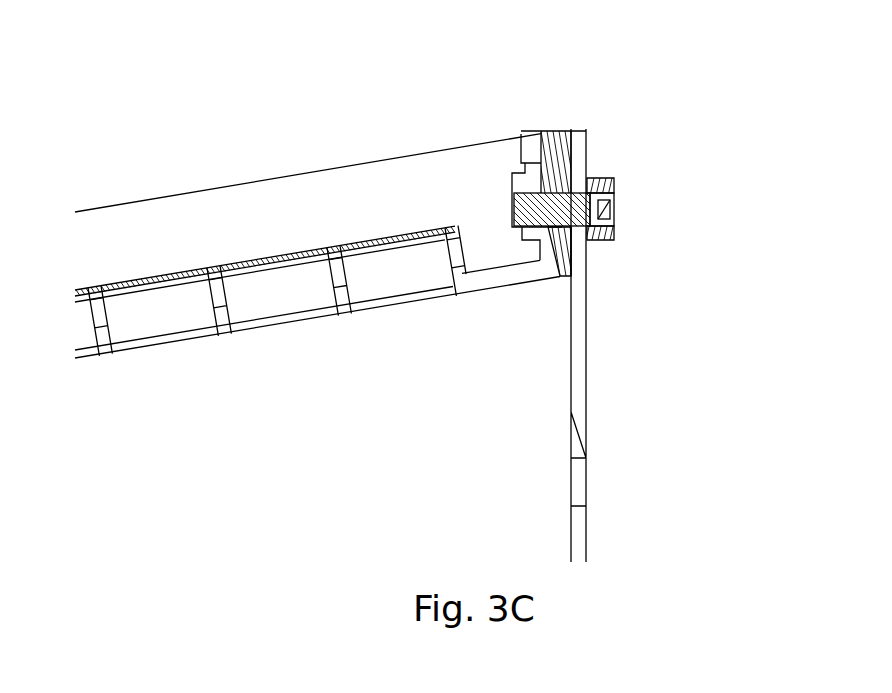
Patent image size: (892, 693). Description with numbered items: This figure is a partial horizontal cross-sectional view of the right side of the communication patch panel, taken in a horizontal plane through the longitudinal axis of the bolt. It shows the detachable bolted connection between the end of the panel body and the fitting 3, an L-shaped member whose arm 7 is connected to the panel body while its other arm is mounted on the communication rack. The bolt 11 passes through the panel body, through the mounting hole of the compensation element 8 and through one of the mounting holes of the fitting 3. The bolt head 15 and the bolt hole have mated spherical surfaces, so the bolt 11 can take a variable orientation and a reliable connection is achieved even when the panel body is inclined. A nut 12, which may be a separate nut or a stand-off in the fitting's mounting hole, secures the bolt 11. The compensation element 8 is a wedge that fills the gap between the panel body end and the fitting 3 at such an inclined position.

The compensation element 8 is at (557, 155).
The bolt head 15 is at (514, 208).
The nut 12 is at (613, 182).
The bolt 11 is at (618, 212).
The fitting 3 is at (669, 345).
The arm 7 is at (579, 365).